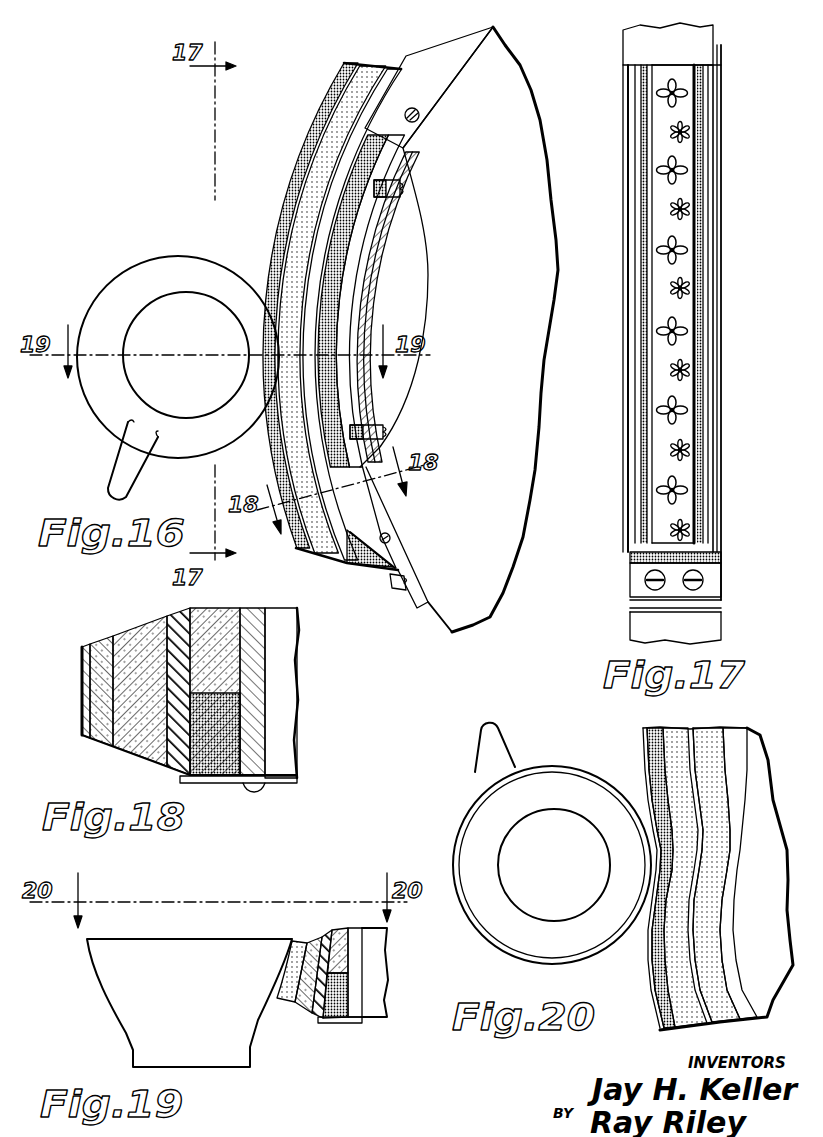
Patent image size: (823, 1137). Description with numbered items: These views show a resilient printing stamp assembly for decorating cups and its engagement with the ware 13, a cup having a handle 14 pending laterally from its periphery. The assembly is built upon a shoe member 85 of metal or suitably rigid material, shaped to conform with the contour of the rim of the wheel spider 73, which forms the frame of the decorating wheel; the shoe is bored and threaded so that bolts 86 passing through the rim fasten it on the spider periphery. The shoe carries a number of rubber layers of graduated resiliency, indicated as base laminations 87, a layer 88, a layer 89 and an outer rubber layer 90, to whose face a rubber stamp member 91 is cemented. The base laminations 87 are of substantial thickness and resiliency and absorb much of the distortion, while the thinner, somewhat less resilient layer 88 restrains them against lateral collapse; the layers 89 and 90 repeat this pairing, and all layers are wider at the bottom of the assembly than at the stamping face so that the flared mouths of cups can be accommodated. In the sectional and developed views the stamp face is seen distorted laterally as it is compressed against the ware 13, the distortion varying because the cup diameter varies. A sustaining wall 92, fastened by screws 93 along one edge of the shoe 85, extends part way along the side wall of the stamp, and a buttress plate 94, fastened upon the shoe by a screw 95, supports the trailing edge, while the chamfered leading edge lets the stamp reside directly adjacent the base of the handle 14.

In FIG. 16, the ware 13 is at (188, 260).
In FIG. 19, the ware 13 is at (250, 1050).
In FIG. 20, the ware 13 is at (573, 769).
In FIG. 16, the handle 14 is at (122, 459).
In FIG. 20, the handle 14 is at (500, 742).
In FIG. 16, the spider 73 is at (372, 276).
In FIG. 16, the shoe member 85 is at (368, 252).
In FIG. 16, the bolts 86 is at (385, 428).
In FIG. 16, the base laminations 87 is at (372, 570).
In FIG. 18, the base laminations 87 is at (216, 612).
In FIG. 19, the base laminations 87 is at (340, 1020).
In FIG. 20, the base laminations 87 is at (740, 731).
In FIG. 16, the layer 88 is at (352, 562).
In FIG. 18, the layer 88 is at (180, 614).
In FIG. 19, the layer 88 is at (318, 1018).
In FIG. 20, the layer 88 is at (704, 731).
In FIG. 16, the layer 89 is at (333, 553).
In FIG. 18, the layer 89 is at (143, 632).
In FIG. 19, the layer 89 is at (305, 1008).
In FIG. 20, the layer 89 is at (680, 731).
In FIG. 16, the outer rubber layer 90 is at (310, 548).
In FIG. 18, the outer rubber layer 90 is at (104, 642).
In FIG. 19, the outer rubber layer 90 is at (290, 1000).
In FIG. 20, the outer rubber layer 90 is at (660, 730).
In FIG. 16, the rubber stamp member 91 is at (295, 537).
In FIG. 18, the rubber stamp member 91 is at (80, 692).
In FIG. 20, the rubber stamp member 91 is at (644, 733).
In FIG. 16, the sustaining wall 92 is at (425, 72).
In FIG. 18, the sustaining wall 92 is at (178, 780).
In FIG. 16, the screws 93 is at (418, 120).
In FIG. 16, the buttress plate 94 is at (400, 560).
In FIG. 16, the screw 95 is at (397, 591).